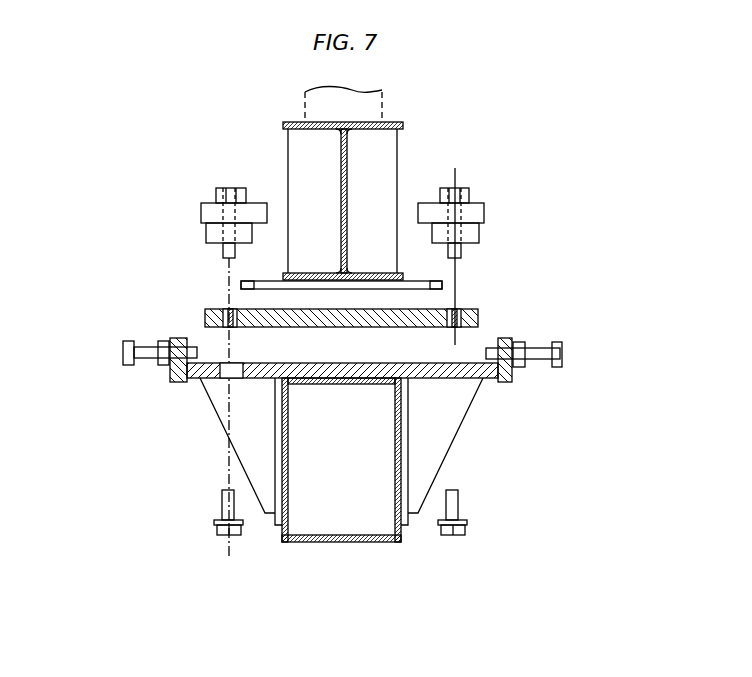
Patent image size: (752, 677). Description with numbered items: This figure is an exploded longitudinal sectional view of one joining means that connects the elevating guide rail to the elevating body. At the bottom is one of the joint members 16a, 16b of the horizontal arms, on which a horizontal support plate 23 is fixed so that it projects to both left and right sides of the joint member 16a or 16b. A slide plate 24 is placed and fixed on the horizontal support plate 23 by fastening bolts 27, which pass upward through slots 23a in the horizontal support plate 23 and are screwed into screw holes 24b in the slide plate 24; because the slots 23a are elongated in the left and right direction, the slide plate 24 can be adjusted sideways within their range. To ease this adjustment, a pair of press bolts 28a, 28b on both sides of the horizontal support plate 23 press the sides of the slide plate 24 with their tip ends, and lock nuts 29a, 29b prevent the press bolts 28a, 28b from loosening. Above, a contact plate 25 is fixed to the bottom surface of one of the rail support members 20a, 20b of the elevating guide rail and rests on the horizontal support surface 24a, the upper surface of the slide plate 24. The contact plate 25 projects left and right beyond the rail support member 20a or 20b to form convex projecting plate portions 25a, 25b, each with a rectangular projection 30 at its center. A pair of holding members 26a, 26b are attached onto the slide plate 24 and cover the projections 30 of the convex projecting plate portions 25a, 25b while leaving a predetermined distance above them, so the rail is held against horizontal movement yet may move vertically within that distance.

The rail support member 20a is at (415, 194).
The rail support member 20b is at (415, 194).
The slide plate 24 is at (315, 300).
The horizontal support surface 24a is at (365, 273).
The screw hole 24b is at (233, 327).
The contact plate 25 is at (352, 310).
The convex projecting plate portion 25a is at (283, 277).
The convex projecting plate portion 25b is at (418, 274).
The rectangular projection 30 is at (345, 325).
The holding member 26a is at (156, 202).
The holding member 26b is at (530, 246).
The horizontal support plate 23 is at (368, 363).
The slot 23a is at (208, 395).
The joint member 16a is at (442, 460).
The joint member 16b is at (403, 435).
The press bolt 28a is at (123, 353).
The press bolt 28b is at (562, 355).
The lock nut 29a is at (160, 366).
The lock nut 29b is at (520, 367).
The fastening bolt 27 is at (222, 506).